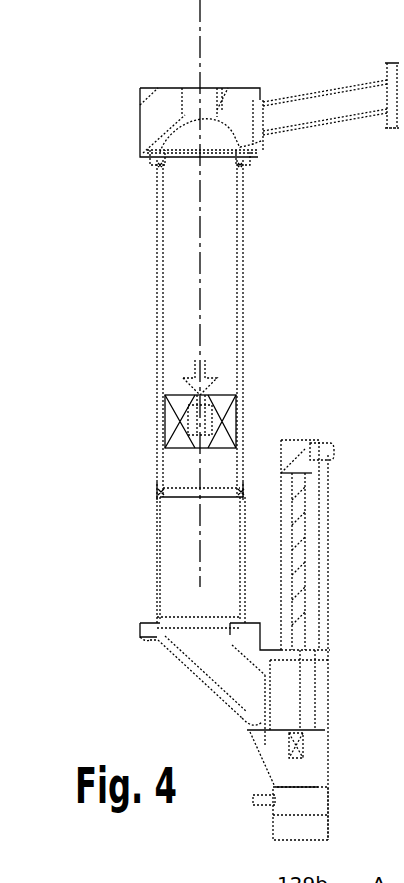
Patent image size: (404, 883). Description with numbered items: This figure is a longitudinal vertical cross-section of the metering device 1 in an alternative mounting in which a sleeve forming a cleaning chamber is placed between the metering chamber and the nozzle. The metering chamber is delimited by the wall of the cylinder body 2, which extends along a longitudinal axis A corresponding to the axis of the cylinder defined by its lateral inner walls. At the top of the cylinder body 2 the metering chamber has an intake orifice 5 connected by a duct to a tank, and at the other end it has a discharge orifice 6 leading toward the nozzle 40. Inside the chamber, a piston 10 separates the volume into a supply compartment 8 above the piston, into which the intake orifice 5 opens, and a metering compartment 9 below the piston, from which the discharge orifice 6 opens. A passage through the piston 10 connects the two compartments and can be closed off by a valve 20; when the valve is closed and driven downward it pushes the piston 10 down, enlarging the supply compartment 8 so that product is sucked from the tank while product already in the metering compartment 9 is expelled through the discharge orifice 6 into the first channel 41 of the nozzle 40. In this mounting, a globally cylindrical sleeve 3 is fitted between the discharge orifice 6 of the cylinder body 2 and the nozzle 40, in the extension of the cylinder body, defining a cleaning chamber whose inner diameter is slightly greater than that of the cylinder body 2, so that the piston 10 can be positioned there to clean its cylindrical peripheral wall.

The metering device 1 is at (103, 126).
The cylinder body 2 is at (240, 203).
The sleeve 3 is at (152, 546).
The intake orifice 5 is at (236, 118).
The discharge orifice 6 is at (190, 493).
The supply compartment 8 is at (183, 262).
The metering compartment 9 is at (183, 466).
The piston 10 is at (228, 424).
The valve 20 is at (182, 377).
The nozzle 40 is at (352, 727).
The first channel 41 is at (238, 675).
The longitudinal axis A is at (200, 53).